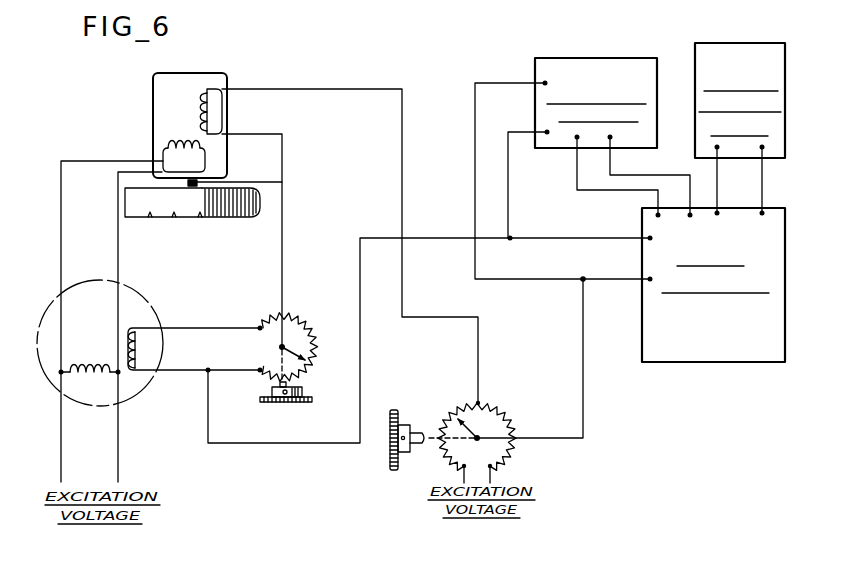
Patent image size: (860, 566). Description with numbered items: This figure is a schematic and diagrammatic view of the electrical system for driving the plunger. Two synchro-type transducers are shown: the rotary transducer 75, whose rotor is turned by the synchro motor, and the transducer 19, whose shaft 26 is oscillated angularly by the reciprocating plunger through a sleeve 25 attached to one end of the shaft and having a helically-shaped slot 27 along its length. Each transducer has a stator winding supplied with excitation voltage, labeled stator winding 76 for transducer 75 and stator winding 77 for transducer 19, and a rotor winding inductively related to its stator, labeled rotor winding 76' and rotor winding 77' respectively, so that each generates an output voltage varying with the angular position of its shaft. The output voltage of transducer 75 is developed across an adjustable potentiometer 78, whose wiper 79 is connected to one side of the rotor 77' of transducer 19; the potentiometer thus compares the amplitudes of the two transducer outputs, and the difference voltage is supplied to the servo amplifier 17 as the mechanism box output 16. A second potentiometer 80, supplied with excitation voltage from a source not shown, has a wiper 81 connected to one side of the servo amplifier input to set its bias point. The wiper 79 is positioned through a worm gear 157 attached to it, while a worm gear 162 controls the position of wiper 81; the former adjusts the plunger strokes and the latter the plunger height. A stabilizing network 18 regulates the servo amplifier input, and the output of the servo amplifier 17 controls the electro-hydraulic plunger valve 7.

The electro-hydraulic plunger valve 7 is at (742, 48).
The output of the mechanism box 16 is at (502, 83).
The servo amplifier 17 is at (722, 344).
The stabilizing network 18 is at (590, 60).
The transducer 19 is at (210, 75).
The sleeve 25 is at (168, 207).
The shaft 26 is at (200, 180).
The helically-shaped slot 27 is at (237, 205).
The rotary transducer 75 is at (142, 294).
The stator winding 76 is at (90, 352).
The rotor winding 76' is at (194, 349).
The stator winding 77 is at (159, 145).
The rotor winding 77' is at (168, 111).
The adjustable potentiometer 78 is at (297, 320).
The wiper 79 is at (297, 350).
The potentiometer 80 is at (482, 405).
The wiper 81 is at (484, 430).
The worm gear 157 is at (300, 404).
The worm gear 162 is at (392, 465).